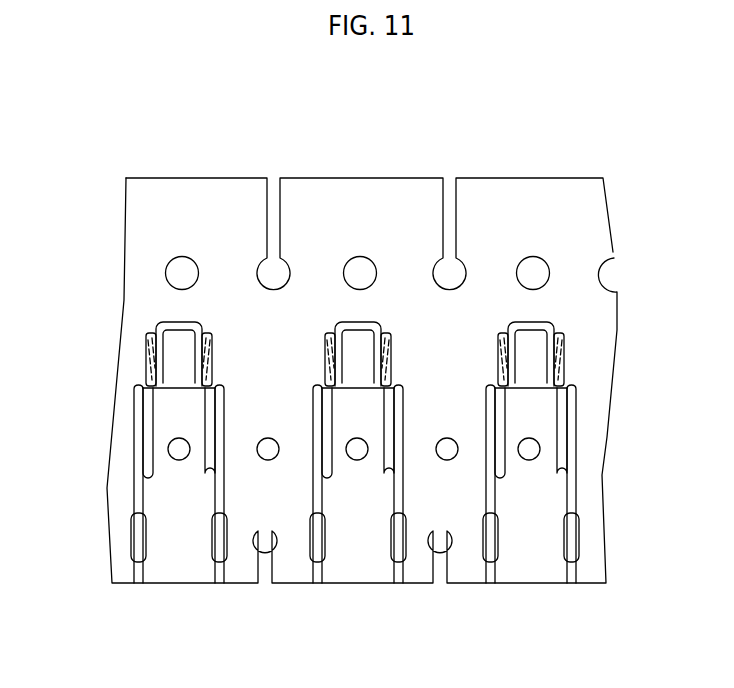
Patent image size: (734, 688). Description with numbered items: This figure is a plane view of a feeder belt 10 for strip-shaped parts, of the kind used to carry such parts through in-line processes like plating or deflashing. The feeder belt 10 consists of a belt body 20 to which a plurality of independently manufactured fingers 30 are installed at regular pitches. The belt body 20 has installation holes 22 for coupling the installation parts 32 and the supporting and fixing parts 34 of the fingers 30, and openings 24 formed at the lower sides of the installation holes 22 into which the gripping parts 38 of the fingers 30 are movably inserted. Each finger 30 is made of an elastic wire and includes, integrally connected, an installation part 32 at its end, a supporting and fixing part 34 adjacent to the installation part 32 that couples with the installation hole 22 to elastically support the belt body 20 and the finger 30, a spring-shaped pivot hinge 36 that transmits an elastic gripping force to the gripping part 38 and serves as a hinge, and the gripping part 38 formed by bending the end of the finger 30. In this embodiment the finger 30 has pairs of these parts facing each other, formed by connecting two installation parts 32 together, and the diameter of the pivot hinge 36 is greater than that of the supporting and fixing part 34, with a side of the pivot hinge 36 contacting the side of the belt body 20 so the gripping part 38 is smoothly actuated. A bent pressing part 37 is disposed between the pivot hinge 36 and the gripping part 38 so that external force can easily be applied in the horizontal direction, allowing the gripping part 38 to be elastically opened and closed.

The feeder belt 10 is at (176, 146).
The belt body 20 is at (363, 190).
The installation hole 22 is at (358, 393).
The opening 24 is at (214, 562).
The finger 30 is at (310, 378).
The installation part 32 is at (177, 322).
The supporting and fixing part 34 is at (200, 373).
The pivot hinge 36 is at (208, 470).
The bent pressing part 37 is at (134, 538).
The gripping part 38 is at (572, 570).